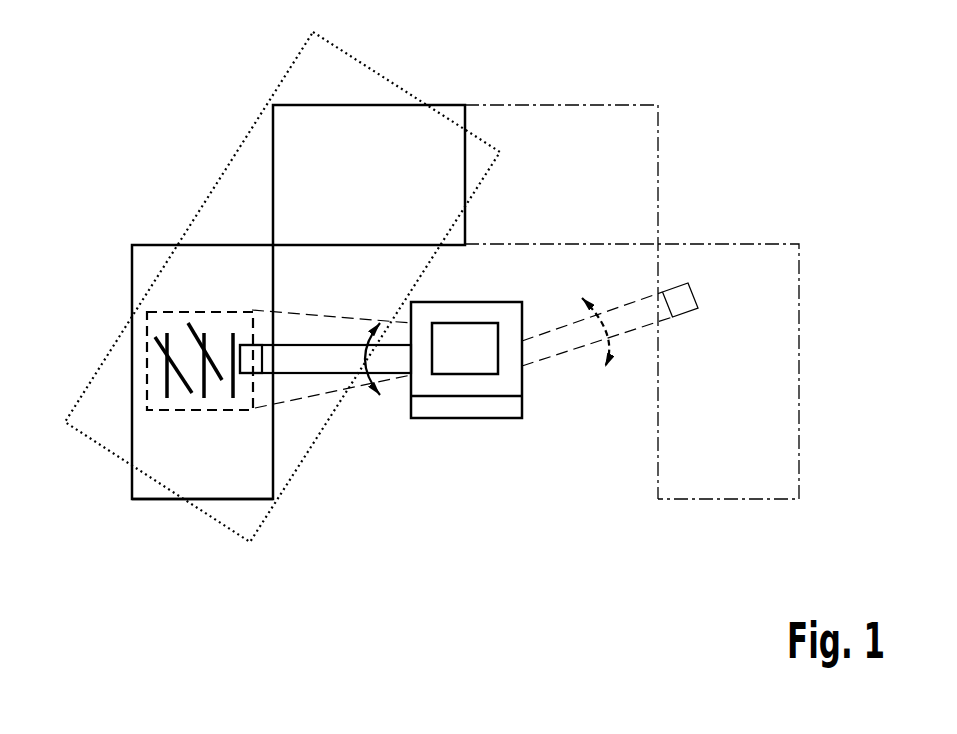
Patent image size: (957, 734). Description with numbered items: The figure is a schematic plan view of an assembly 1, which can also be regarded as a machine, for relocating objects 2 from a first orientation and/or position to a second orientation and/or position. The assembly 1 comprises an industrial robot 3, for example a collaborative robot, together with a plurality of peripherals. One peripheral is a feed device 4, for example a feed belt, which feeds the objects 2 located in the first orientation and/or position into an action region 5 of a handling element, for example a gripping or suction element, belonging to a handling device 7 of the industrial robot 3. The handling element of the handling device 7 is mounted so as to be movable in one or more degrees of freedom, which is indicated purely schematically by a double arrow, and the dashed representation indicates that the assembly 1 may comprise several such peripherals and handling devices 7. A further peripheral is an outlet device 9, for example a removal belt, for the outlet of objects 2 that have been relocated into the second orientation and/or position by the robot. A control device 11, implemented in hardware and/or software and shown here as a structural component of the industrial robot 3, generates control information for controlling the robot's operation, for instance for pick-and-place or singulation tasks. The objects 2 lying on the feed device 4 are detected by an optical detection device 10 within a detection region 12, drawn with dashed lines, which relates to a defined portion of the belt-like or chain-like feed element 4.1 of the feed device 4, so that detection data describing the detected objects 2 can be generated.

The assembly 1 is at (172, 100).
The objects 2 is at (167, 385).
The industrial robot 3 is at (530, 445).
The feed device 4 is at (132, 487).
The feed element 4.1 is at (212, 480).
The action region 5 is at (205, 212).
The handling device 7 is at (325, 380).
The outlet device 9 is at (384, 105).
The optical detection device 10 is at (477, 375).
The control device 11 is at (440, 418).
The detection region 12 is at (147, 338).